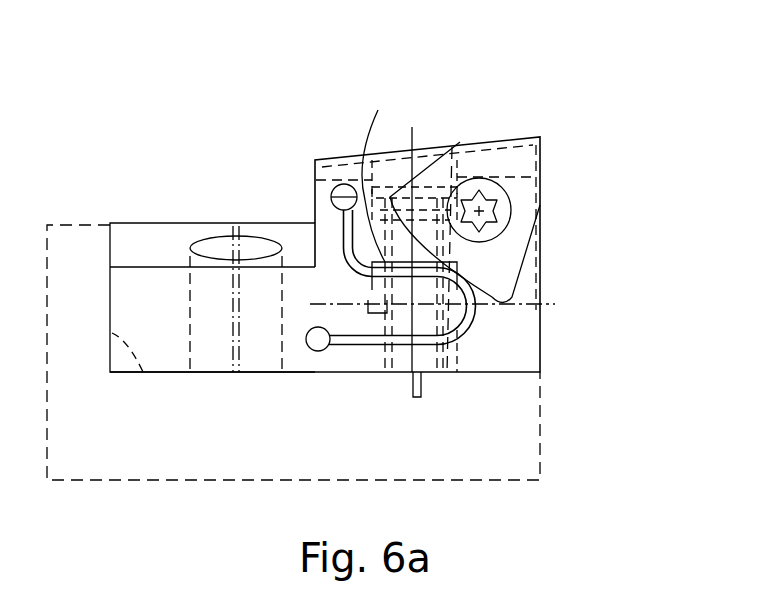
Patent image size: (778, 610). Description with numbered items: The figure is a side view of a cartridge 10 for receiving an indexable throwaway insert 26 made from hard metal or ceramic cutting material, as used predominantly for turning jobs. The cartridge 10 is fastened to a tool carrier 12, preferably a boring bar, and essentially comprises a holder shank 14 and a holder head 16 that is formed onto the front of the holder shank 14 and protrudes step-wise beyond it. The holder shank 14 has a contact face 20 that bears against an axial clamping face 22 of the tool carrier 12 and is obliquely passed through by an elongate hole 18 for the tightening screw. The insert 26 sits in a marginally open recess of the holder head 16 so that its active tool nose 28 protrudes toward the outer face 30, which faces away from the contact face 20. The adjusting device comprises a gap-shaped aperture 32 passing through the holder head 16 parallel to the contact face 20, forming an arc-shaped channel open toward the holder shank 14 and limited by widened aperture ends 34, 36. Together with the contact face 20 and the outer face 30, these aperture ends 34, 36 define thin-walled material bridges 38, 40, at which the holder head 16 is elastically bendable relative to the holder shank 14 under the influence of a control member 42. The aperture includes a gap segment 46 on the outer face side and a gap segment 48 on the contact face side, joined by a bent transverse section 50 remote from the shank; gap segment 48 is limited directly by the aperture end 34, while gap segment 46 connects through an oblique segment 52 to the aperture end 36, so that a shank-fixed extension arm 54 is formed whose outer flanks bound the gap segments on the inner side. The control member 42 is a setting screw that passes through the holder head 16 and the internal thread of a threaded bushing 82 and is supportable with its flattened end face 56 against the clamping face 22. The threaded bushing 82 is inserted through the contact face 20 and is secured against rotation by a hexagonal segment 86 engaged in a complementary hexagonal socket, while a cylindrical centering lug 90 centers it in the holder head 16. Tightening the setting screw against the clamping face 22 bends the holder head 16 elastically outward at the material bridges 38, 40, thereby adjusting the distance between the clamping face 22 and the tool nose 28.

The cartridge 10 is at (273, 208).
The tool carrier 12 is at (527, 400).
The holder shank 14 is at (140, 248).
The holder head 16 is at (527, 293).
The elongate hole 18 is at (215, 247).
The contact face 20 is at (283, 372).
The clamping face 22 is at (112, 333).
The indexable throwaway insert 26 is at (540, 205).
The tool nose 28 is at (540, 137).
The outer face 30 is at (400, 153).
The aperture 32 is at (470, 331).
The aperture end 34 is at (330, 351).
The aperture end 36 is at (342, 190).
The material bridge 38 is at (315, 372).
The material bridge 40 is at (330, 192).
The control member 42 is at (452, 147).
The gap segment 46 is at (409, 175).
The gap segment 48 is at (378, 372).
The transverse section 50 is at (473, 313).
The oblique segment 52 is at (348, 243).
The extension arm 54 is at (462, 290).
The end face 56 is at (428, 382).
The threaded bushing 82 is at (467, 350).
The hexagonal segment 86 is at (457, 373).
The centering lug 90 is at (419, 310).